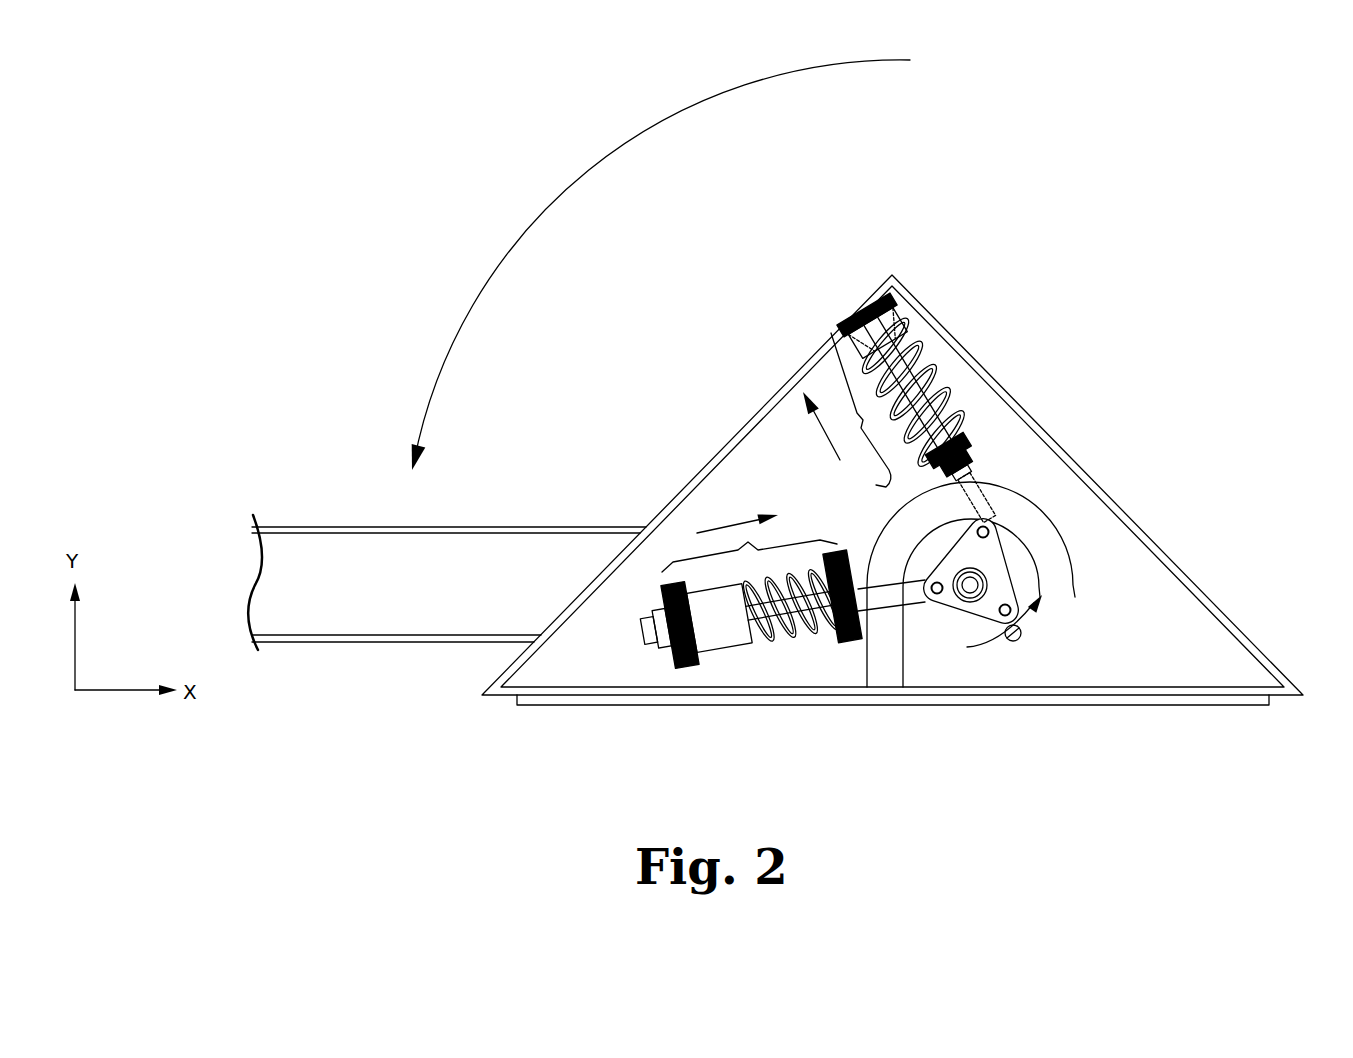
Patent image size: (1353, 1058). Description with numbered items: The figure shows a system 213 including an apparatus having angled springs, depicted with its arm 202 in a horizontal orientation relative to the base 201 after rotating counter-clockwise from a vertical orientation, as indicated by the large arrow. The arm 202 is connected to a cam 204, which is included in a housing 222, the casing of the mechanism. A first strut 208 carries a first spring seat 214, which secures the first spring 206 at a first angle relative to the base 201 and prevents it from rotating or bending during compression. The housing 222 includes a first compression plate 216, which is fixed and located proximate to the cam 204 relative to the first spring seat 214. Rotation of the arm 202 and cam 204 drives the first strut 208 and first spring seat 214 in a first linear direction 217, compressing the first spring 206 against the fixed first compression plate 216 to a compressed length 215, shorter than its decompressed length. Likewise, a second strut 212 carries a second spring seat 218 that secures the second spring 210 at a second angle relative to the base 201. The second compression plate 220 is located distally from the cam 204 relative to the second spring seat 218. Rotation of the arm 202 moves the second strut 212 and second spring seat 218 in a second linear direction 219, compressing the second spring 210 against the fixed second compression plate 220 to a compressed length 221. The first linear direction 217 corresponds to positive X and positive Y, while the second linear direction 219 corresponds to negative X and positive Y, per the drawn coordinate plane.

The base 201 is at (548, 706).
The arm 202 is at (485, 632).
The cam 204 is at (983, 555).
The first spring 206 is at (767, 645).
The first strut 208 is at (783, 650).
The second spring 210 is at (936, 362).
The second strut 212 is at (933, 410).
The system 213 is at (378, 198).
The first spring seat 214 is at (688, 667).
The compressed length 215 is at (680, 577).
The first compression plate 216 is at (850, 643).
The first linear direction 217 is at (710, 553).
The second spring seat 218 is at (980, 447).
The second linear direction 219 is at (818, 422).
The second compression plate 220 is at (874, 308).
The compressed length 221 is at (880, 482).
The housing 222 is at (1243, 630).